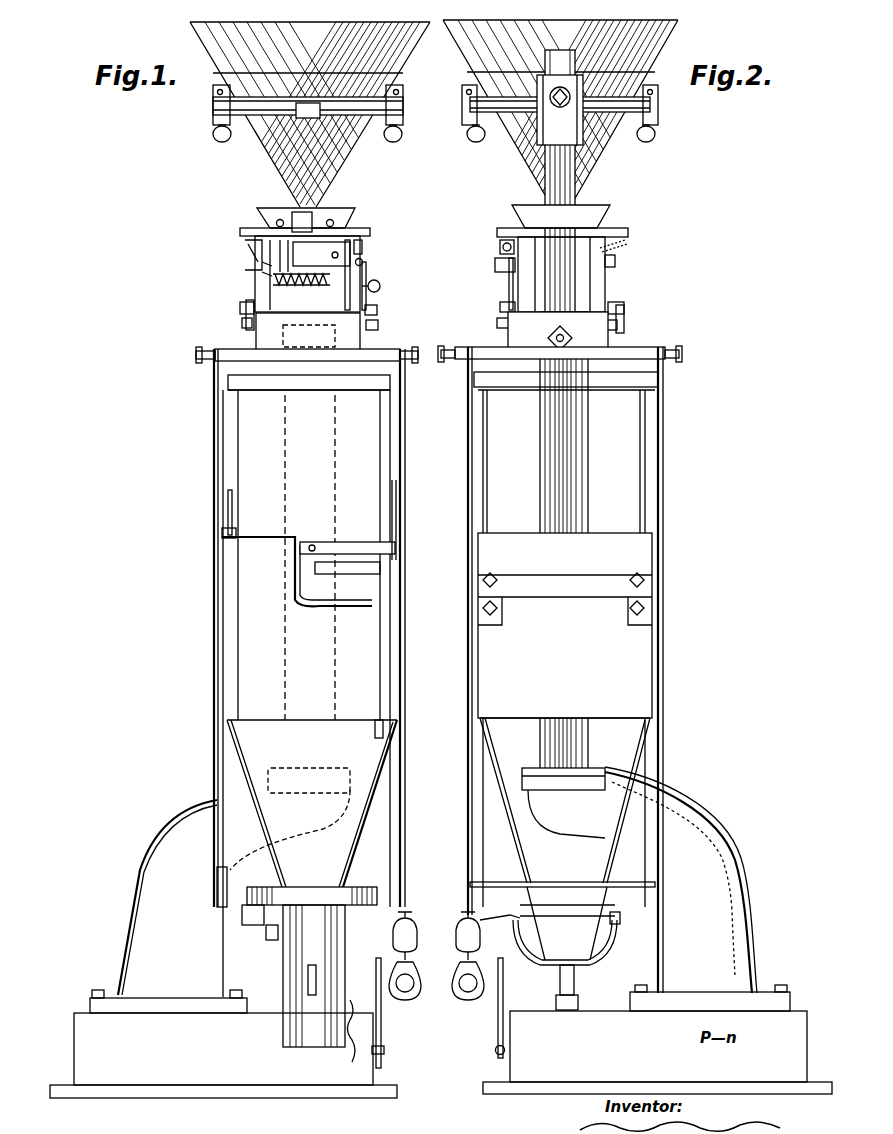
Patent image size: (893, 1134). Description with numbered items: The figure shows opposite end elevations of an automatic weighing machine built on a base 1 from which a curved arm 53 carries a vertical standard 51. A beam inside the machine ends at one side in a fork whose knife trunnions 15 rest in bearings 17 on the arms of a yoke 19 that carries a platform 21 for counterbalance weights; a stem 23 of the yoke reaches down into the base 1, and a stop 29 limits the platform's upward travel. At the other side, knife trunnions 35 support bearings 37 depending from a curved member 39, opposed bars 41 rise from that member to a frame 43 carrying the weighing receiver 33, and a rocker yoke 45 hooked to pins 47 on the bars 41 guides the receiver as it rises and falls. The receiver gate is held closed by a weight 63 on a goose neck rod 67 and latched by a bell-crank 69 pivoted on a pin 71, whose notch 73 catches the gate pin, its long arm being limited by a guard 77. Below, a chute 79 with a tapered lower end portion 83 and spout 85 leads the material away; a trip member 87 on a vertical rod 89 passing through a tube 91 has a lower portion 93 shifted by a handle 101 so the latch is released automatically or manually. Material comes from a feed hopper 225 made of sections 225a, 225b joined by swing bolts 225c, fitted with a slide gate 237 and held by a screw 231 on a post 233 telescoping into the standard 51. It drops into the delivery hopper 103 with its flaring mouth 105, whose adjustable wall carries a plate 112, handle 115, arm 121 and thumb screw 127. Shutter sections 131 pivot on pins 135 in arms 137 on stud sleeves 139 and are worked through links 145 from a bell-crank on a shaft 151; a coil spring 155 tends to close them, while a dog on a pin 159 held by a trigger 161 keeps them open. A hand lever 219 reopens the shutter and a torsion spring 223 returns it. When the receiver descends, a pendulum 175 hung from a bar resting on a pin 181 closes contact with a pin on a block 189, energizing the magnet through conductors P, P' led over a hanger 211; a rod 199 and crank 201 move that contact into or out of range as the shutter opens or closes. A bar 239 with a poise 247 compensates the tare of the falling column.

In FIG. 1, the base 1 is at (75, 1025).
In FIG. 2, the base 1 is at (800, 1018).
In FIG. 2, the knife trunnions 15 is at (622, 920).
In FIG. 2, the bearings 17 is at (620, 916).
In FIG. 2, the yoke 19 is at (615, 945).
In FIG. 2, the platform 21 is at (640, 882).
In FIG. 2, the stem 23 is at (556, 1008).
In FIG. 2, the stop 29 is at (576, 975).
In FIG. 1, the weighing receiver 33 is at (238, 452).
In FIG. 2, the weighing receiver 33 is at (483, 438).
In FIG. 1, the knife trunnions 35 is at (266, 935).
In FIG. 1, the bearings 37 is at (242, 912).
In FIG. 1, the curved member 39 is at (305, 887).
In FIG. 1, the opposed bars 41 is at (405, 470).
In FIG. 2, the opposed bars 41 is at (663, 470).
In FIG. 1, the frame 43 is at (245, 380).
In FIG. 2, the frame 43 is at (500, 380).
In FIG. 1, the rocker yoke 45 is at (232, 354).
In FIG. 2, the rocker yoke 45 is at (640, 370).
In FIG. 1, the pins 47 is at (196, 354).
In FIG. 2, the pins 47 is at (456, 355).
In FIG. 1, the vertical standard 51 is at (285, 468).
In FIG. 2, the vertical standard 51 is at (540, 462).
In FIG. 1, the curved arm 53 is at (192, 810).
In FIG. 2, the curved arm 53 is at (728, 818).
In FIG. 1, the weight 63 is at (222, 534).
In FIG. 1, the goose neck rod 67 is at (228, 515).
In FIG. 1, the bell-crank 69 is at (355, 542).
In FIG. 1, the pin 71 is at (312, 545).
In FIG. 1, the notch 73 is at (298, 578).
In FIG. 1, the guard 77 is at (396, 530).
In FIG. 1, the chute 79 is at (223, 643).
In FIG. 2, the chute 79 is at (490, 668).
In FIG. 1, the tapered lower end portion 83 is at (262, 822).
In FIG. 2, the tapered lower end portion 83 is at (520, 838).
In FIG. 1, the spout 85 is at (283, 1030).
In FIG. 1, the trip member 87 is at (362, 574).
In FIG. 1, the vertical rod 89 is at (358, 843).
In FIG. 1, the tube 91 is at (385, 732).
In FIG. 1, the lower portion 93 is at (355, 1040).
In FIG. 1, the handle 101 is at (308, 975).
In FIG. 1, the delivery hopper 103 is at (262, 300).
In FIG. 2, the delivery hopper 103 is at (606, 298).
In FIG. 1, the flaring mouth 105 is at (336, 206).
In FIG. 2, the flaring mouth 105 is at (600, 213).
In FIG. 1, the plate 112 is at (240, 232).
In FIG. 1, the handle 115 is at (294, 214).
In FIG. 1, the arm 121 is at (336, 222).
In FIG. 1, the thumb screw 127 is at (276, 222).
In FIG. 1, the shutter sections 131 is at (292, 343).
In FIG. 2, the shutter sections 131 is at (540, 343).
In FIG. 1, the pins 135 is at (240, 307).
In FIG. 2, the pins 135 is at (500, 306).
In FIG. 1, the arms 137 is at (246, 318).
In FIG. 2, the arms 137 is at (624, 318).
In FIG. 1, the stud sleeves 139 is at (242, 327).
In FIG. 2, the stud sleeves 139 is at (497, 325).
In FIG. 1, the links 145 is at (368, 300).
In FIG. 2, the links 145 is at (509, 290).
In FIG. 1, the shaft 151 is at (345, 284).
In FIG. 2, the shaft 151 is at (495, 265).
In FIG. 2, the coil spring 155 is at (500, 245).
In FIG. 1, the pin 159 is at (365, 262).
In FIG. 1, the trigger 161 is at (363, 250).
In FIG. 1, the pendulum 175 is at (382, 1035).
In FIG. 2, the pendulum 175 is at (498, 1025).
In FIG. 1, the pin 181 is at (400, 998).
In FIG. 1, the block 189 is at (384, 1052).
In FIG. 2, the block 189 is at (495, 1052).
In FIG. 2, the rod 199 is at (600, 805).
In FIG. 2, the crank 201 is at (560, 352).
In FIG. 1, the hanger 211 is at (250, 254).
In FIG. 2, the hanger 211 is at (627, 242).
In FIG. 1, the hand lever 219 is at (381, 286).
In FIG. 1, the torsion spring 223 is at (306, 287).
In FIG. 1, the feed hopper 225 is at (290, 158).
In FIG. 2, the feed hopper 225 is at (535, 143).
In FIG. 1, the upper section 225a is at (398, 66).
In FIG. 2, the upper section 225a is at (660, 40).
In FIG. 1, the lower section 225b is at (340, 157).
In FIG. 2, the lower section 225b is at (612, 172).
In FIG. 1, the swing bolts 225c is at (213, 127).
In FIG. 2, the swing bolts 225c is at (462, 120).
In FIG. 2, the screw 231 is at (592, 112).
In FIG. 2, the post 233 is at (545, 186).
In FIG. 1, the slide gate 237 is at (308, 103).
In FIG. 1, the bar 239 is at (408, 912).
In FIG. 2, the bar 239 is at (462, 914).
In FIG. 1, the poise 247 is at (416, 994).
In FIG. 2, the poise 247 is at (452, 994).
In FIG. 1, the conductor P is at (235, 270).
In FIG. 2, the conductor P is at (687, 878).
In FIG. 1, the conductor P' is at (232, 284).
In FIG. 2, the conductor P' is at (750, 878).